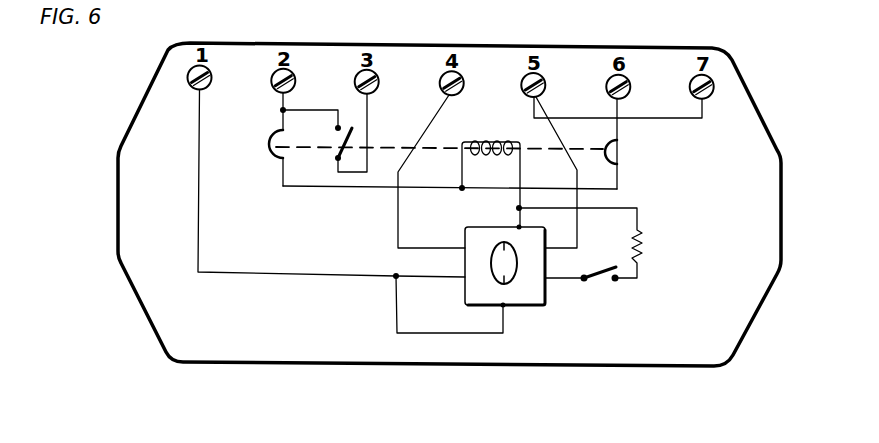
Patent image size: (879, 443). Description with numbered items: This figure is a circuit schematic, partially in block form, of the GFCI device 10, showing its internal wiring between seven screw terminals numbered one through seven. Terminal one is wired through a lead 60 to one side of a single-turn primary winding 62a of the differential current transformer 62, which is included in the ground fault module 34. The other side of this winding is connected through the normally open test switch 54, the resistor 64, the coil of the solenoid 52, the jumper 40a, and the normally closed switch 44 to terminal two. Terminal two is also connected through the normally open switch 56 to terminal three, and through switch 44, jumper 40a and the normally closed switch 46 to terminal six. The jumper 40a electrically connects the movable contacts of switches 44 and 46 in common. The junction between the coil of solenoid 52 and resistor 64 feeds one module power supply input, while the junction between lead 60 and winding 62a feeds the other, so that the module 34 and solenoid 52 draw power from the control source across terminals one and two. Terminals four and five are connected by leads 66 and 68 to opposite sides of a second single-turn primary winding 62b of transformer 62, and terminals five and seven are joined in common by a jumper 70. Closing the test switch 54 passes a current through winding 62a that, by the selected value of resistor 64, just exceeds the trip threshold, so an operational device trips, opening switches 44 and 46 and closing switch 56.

The GFCI device 10 is at (135, 96).
The normally closed switch 44 is at (270, 138).
The normally open switch 56 is at (355, 132).
The solenoid 52 is at (501, 124).
The lead 66 is at (408, 157).
The lead 68 is at (569, 163).
The normally closed switch 46 is at (607, 143).
The jumper 70 is at (660, 119).
The jumper 40a is at (325, 186).
The lead 60 is at (281, 273).
The differential current transformer 62 is at (509, 260).
The second single-turn primary winding 62b is at (505, 243).
The single-turn primary winding 62a is at (503, 282).
The ground fault module 34 is at (532, 298).
The test switch 54 is at (594, 283).
The resistor 64 is at (642, 246).